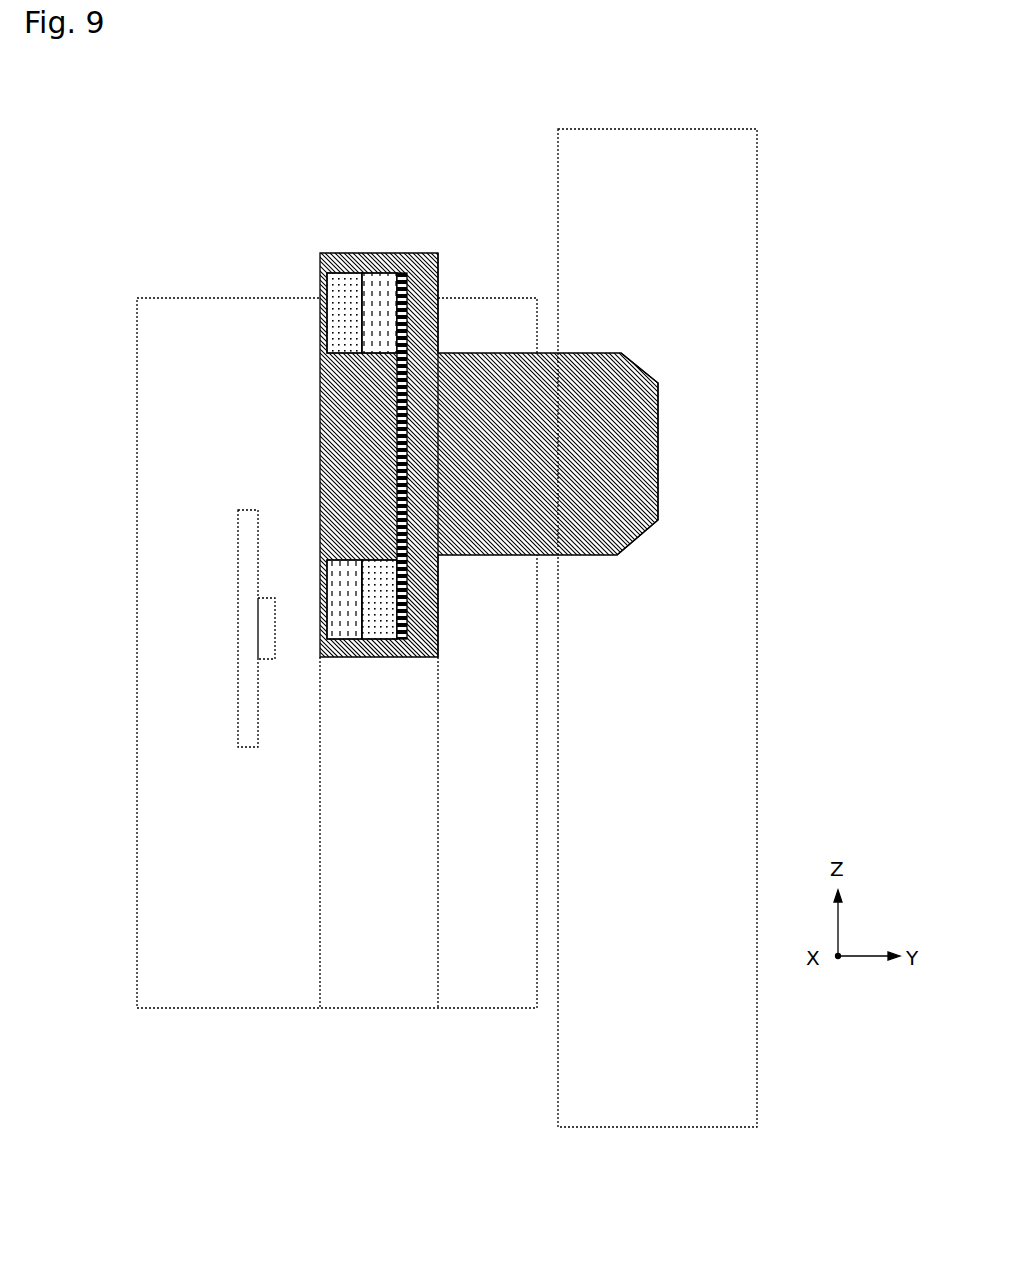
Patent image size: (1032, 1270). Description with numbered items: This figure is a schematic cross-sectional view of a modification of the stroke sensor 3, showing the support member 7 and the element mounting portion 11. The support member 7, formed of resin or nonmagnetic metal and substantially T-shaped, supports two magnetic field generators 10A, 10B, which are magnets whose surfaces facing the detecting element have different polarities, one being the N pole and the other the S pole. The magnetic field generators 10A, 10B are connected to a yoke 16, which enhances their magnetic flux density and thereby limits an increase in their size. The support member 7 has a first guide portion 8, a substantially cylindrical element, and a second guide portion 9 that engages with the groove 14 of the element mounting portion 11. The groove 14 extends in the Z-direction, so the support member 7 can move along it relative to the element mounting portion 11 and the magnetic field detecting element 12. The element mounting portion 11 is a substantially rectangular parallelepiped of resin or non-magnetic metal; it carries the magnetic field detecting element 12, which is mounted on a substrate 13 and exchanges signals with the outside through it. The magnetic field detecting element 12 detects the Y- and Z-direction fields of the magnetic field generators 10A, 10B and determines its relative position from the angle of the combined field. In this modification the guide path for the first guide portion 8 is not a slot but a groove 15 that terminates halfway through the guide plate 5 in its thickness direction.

The stroke sensor 3 is at (513, 93).
The guide plate 5 is at (738, 212).
The support member 7 is at (516, 387).
The first guide portion 8 is at (478, 372).
The second guide portion 9 is at (414, 255).
The magnetic field generator 10A is at (323, 322).
The magnetic field generator 10B is at (345, 630).
The element mounting portion 11 is at (203, 318).
The magnetic field detecting element 12 is at (265, 617).
The substrate 13 is at (252, 678).
The groove 14 is at (319, 794).
The groove 15 is at (578, 358).
The yoke 16 is at (397, 425).